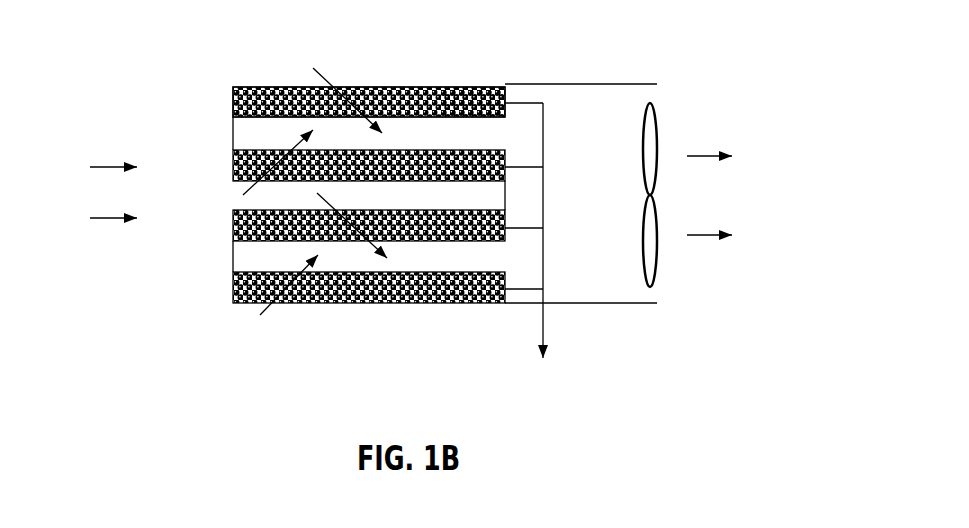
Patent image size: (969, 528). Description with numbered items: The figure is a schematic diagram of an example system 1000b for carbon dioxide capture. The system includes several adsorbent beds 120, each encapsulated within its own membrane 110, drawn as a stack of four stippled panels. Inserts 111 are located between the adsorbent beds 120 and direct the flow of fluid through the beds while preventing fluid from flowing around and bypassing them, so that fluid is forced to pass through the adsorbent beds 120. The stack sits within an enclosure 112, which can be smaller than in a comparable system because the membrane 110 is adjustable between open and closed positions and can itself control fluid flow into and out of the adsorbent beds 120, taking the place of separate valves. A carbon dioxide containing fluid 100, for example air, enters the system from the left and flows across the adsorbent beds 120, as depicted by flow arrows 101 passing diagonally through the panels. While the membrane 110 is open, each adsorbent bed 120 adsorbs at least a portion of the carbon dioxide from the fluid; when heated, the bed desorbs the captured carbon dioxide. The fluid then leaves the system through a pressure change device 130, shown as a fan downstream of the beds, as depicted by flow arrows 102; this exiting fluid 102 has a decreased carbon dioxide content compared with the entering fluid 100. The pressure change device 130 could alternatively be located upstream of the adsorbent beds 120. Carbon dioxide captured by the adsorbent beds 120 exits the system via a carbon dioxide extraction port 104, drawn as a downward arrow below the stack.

The carbon dioxide containing fluid 100 is at (110, 218).
The flow arrow 101 is at (328, 86).
The fluid exiting the system 102 is at (706, 235).
The carbon dioxide extraction port 104 is at (543, 328).
The membrane 110 is at (262, 87).
The inserts 111 is at (233, 136).
The enclosure 112 is at (585, 84).
The adsorbent bed 120 is at (468, 98).
The pressure change device 130 is at (656, 145).
The water harvesting system 1000b is at (703, 360).